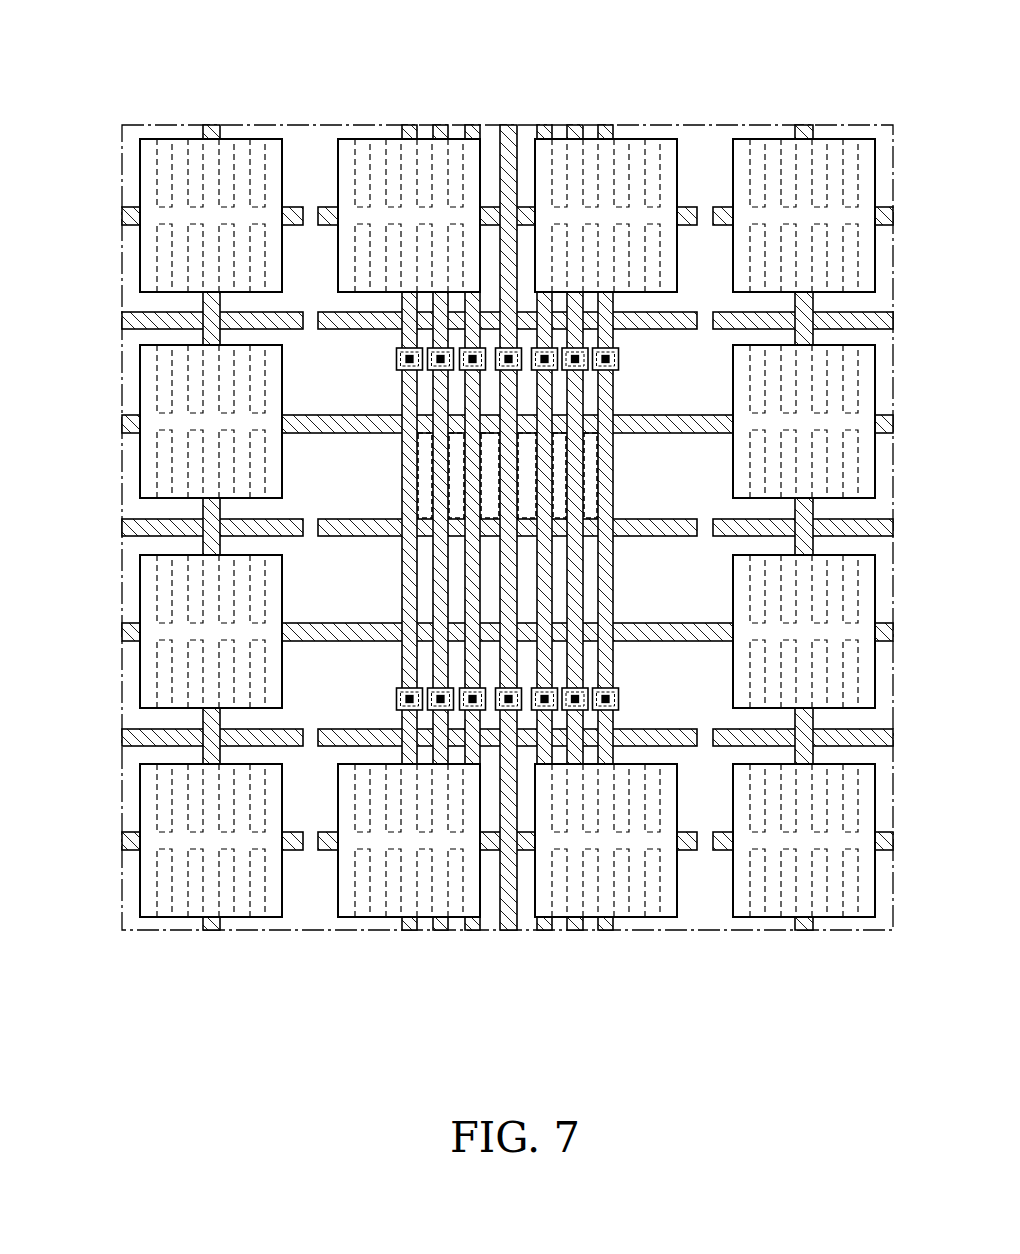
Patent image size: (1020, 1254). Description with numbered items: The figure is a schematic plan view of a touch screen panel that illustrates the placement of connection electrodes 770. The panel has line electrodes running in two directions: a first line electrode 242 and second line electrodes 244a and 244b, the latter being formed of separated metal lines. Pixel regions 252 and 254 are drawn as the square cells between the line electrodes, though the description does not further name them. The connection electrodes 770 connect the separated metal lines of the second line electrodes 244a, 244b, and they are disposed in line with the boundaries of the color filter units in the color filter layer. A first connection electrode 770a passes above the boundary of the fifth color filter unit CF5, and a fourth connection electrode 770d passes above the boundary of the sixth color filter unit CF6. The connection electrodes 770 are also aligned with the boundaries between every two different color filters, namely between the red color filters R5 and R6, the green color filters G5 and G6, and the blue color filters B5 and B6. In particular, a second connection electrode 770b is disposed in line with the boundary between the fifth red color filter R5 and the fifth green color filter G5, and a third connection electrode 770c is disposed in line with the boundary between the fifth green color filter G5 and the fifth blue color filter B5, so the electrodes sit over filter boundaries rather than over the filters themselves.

The first line electrode 242 is at (325, 633).
The second line electrode 244a is at (343, 322).
The second line electrode 244b is at (327, 733).
The pixel electrode 252 is at (348, 903).
The pixel electrode 254 is at (244, 805).
The connection electrodes 770 is at (510, 594).
The first connection electrode 770a is at (402, 660).
The second connection electrode 770b is at (463, 660).
The third connection electrode 770c is at (498, 660).
The fourth connection electrode 770d is at (578, 648).
The fifth color filter unit CF5 is at (448, 267).
The sixth color filter unit CF6 is at (583, 274).
The fifth red color filter R5 is at (419, 438).
The fifth green color filter G5 is at (449, 438).
The fifth blue color filter B5 is at (483, 438).
The red color filter R6 is at (519, 438).
The green color filter G6 is at (553, 438).
The blue color filter B6 is at (584, 438).